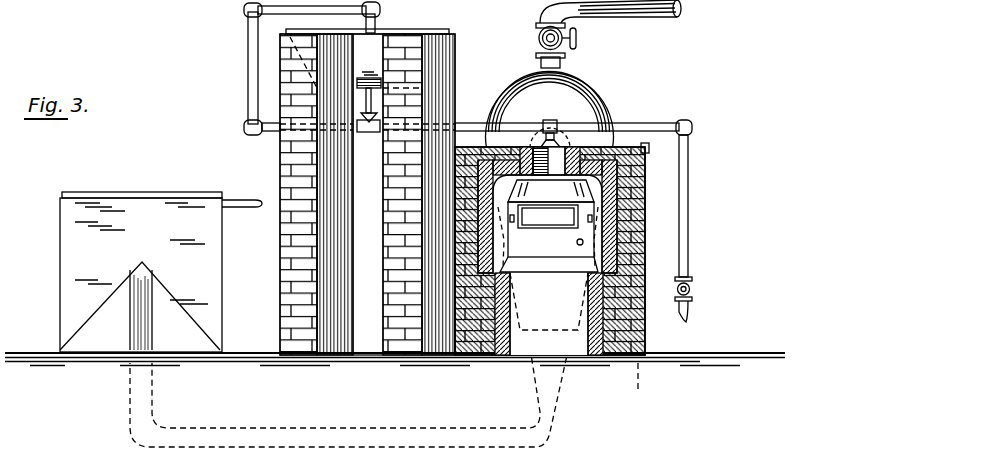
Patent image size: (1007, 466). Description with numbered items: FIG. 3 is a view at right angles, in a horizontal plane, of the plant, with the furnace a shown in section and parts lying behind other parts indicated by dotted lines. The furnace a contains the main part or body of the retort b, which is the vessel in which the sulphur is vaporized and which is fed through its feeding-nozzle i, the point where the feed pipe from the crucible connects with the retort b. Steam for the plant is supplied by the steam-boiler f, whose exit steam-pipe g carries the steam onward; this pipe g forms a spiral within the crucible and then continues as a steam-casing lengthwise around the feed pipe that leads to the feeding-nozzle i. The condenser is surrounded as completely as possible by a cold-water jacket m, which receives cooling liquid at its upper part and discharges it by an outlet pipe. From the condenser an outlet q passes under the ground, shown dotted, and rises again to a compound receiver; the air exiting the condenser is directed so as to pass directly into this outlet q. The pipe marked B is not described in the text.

The furnace a is at (645, 239).
The retort b is at (548, 226).
The steam-boiler f is at (549, 314).
The exit steam-pipe g is at (247, 74).
The feeding-nozzle i is at (553, 123).
The cold-water jacket m is at (550, 85).
The outlet q is at (133, 310).
The pipe B is at (610, 11).